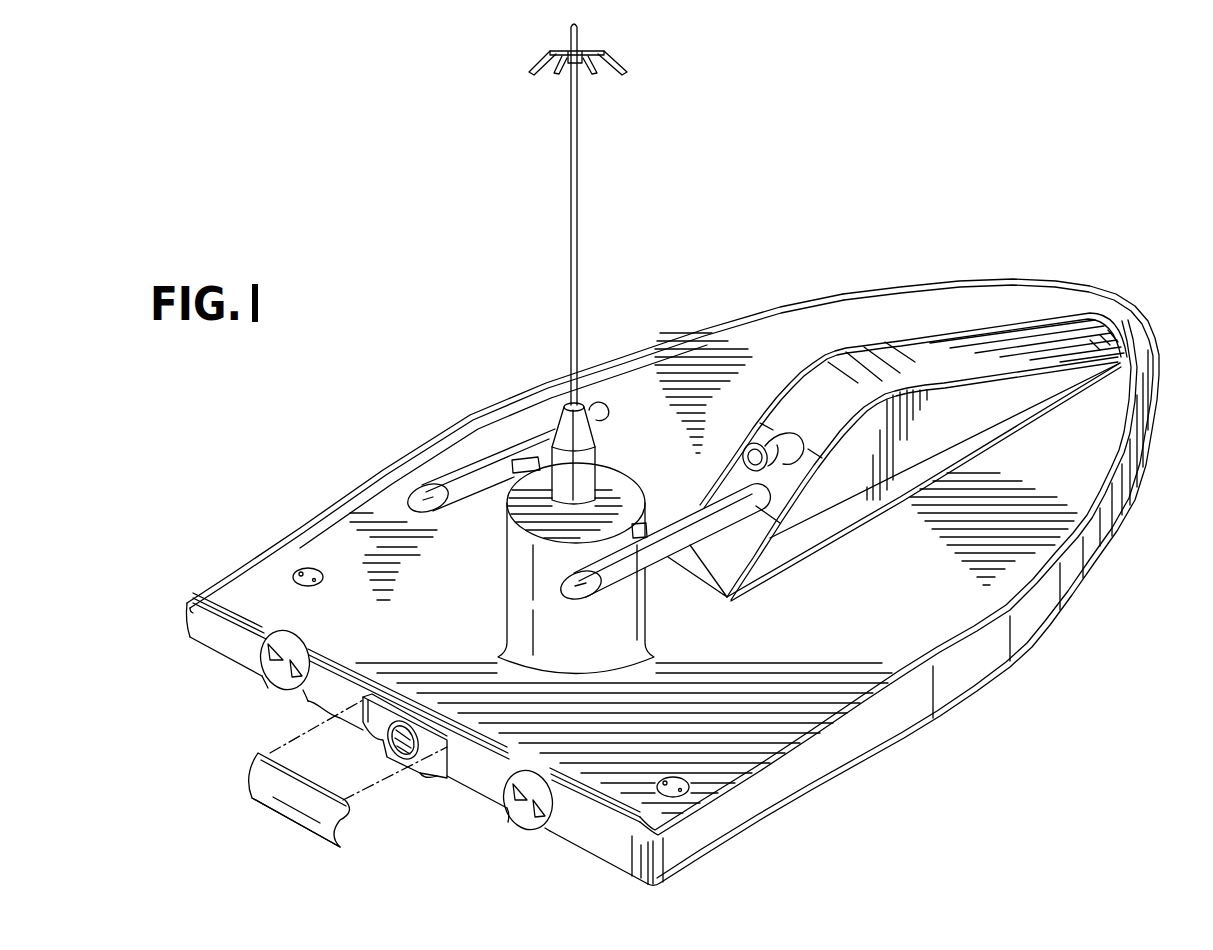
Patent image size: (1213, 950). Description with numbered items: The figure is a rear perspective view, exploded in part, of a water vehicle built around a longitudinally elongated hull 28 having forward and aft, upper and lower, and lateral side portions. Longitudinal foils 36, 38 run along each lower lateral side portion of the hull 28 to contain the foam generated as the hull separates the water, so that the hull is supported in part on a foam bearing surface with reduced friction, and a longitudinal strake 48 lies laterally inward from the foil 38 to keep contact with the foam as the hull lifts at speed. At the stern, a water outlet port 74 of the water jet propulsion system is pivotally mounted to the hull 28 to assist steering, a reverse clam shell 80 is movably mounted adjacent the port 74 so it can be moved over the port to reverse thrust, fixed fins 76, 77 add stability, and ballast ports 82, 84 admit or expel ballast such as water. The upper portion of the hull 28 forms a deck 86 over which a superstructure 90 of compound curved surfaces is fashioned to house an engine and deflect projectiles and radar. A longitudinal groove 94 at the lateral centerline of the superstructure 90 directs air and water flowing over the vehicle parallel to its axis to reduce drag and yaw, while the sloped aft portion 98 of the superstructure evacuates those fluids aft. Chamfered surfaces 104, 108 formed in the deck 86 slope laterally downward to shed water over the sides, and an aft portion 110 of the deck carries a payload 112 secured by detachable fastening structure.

The hull 28 is at (954, 268).
The longitudinal foil 36 is at (646, 880).
The longitudinal foil 38 is at (193, 640).
The longitudinal strake 48 is at (289, 690).
The water outlet port 74 is at (408, 752).
The fixed fin 76 is at (383, 766).
The fixed fin 77 is at (421, 780).
The reverse clam shell 80 is at (343, 835).
The ballast port 82 is at (270, 670).
The ballast port 84 is at (528, 810).
The deck 86 is at (392, 500).
The superstructure 90 is at (985, 413).
The longitudinal groove 94 is at (850, 355).
The aft portion of the superstructure 98 is at (780, 413).
The chamfered surface 104 is at (862, 733).
The chamfered surface 108 is at (478, 418).
The aft portion of the deck 110 is at (370, 633).
The payload 112 is at (537, 583).